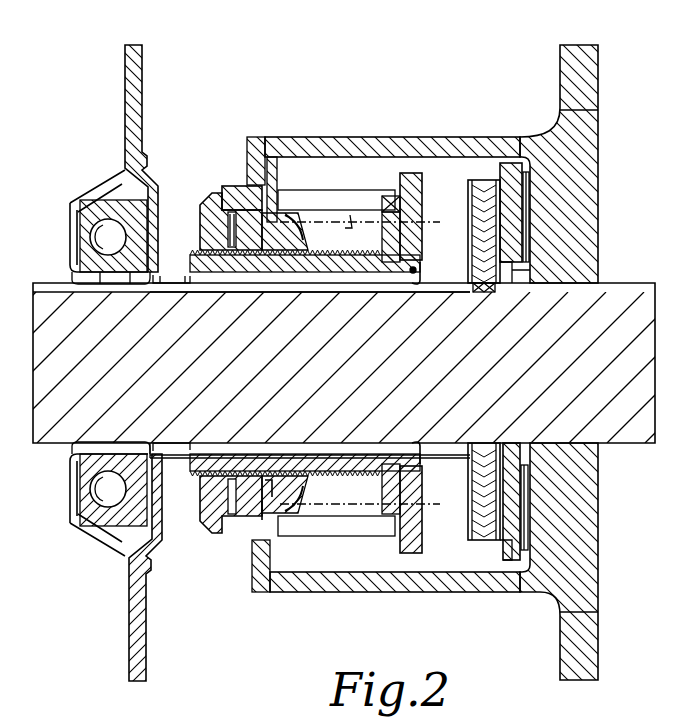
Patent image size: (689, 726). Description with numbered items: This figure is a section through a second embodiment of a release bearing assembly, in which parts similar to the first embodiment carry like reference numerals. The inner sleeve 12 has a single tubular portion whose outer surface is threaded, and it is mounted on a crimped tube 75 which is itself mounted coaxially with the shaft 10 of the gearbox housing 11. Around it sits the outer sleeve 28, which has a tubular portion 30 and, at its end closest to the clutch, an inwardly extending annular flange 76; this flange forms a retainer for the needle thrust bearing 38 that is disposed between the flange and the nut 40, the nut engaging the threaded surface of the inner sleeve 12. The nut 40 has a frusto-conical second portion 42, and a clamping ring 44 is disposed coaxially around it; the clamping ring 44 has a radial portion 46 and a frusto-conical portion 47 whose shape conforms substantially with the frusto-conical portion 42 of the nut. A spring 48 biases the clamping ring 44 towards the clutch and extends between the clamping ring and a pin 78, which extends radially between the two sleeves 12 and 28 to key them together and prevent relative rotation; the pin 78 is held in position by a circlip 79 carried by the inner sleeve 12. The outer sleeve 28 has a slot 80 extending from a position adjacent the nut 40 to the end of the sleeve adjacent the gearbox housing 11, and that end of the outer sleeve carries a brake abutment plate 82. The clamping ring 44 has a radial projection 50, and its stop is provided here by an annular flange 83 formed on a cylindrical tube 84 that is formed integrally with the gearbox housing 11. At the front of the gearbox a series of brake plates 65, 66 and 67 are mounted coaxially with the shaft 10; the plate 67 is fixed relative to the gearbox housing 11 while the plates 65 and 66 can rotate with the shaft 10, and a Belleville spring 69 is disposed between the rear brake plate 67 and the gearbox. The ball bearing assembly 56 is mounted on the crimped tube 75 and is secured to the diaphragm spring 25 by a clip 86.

The shaft 10 is at (598, 415).
The gearbox housing 11 is at (586, 193).
The inner sleeve 12 is at (280, 262).
The diaphragm spring 25 is at (141, 129).
The outer sleeve 28 is at (240, 200).
The tubular portion 30 is at (338, 528).
The needle thrust bearing 38 is at (225, 245).
The nut 40 is at (236, 262).
The frusto-conical second portion 42 is at (273, 494).
The clamping ring 44 is at (255, 255).
The radial portion 46 is at (262, 520).
The frusto-conical portion 47 is at (298, 245).
The spring 48 is at (352, 228).
The radial projection 50 is at (278, 172).
The ball bearing assembly 56 is at (72, 233).
The brake plate 65 is at (470, 483).
The brake plate 66 is at (490, 455).
The rear brake plate 67 is at (515, 518).
The Belleville spring 69 is at (503, 236).
The crimped tube 75 is at (355, 290).
The annular flange 76 is at (205, 225).
The pin 78 is at (392, 262).
The circlip 79 is at (414, 272).
The slot 80 is at (326, 203).
The brake abutment plate 82 is at (412, 225).
The annular flange 83 is at (256, 150).
The cylindrical tube 84 is at (336, 150).
The clip 86 is at (100, 190).